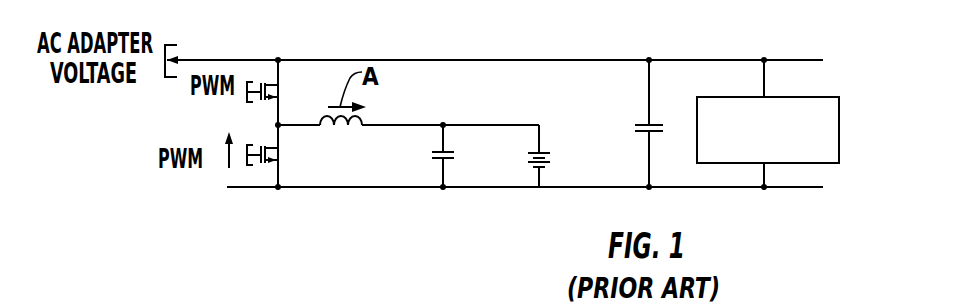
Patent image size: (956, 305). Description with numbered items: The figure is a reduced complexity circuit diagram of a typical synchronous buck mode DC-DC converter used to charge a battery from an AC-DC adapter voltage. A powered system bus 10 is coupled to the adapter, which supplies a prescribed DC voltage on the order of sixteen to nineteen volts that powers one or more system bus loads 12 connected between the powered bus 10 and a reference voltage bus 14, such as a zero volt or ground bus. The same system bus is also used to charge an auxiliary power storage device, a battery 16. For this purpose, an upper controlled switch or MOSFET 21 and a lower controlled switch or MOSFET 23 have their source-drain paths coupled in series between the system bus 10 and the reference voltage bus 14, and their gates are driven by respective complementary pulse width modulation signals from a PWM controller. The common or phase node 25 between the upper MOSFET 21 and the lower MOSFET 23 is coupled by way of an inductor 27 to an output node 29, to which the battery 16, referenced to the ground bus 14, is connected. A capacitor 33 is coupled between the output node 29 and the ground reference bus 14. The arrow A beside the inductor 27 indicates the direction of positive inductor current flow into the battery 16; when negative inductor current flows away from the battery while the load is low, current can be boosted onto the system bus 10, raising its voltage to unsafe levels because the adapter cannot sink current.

The powered system bus 10 is at (540, 60).
The system bus loads 12 is at (839, 125).
The reference voltage bus 14 is at (780, 188).
The battery 16 is at (548, 158).
The upper controlled switch or MOSFET 21 is at (287, 90).
The lower controlled switch or MOSFET 23 is at (287, 153).
The phase node 25 is at (276, 125).
The inductor 27 is at (350, 140).
The output node 29 is at (445, 124).
The capacitor 33 is at (455, 157).